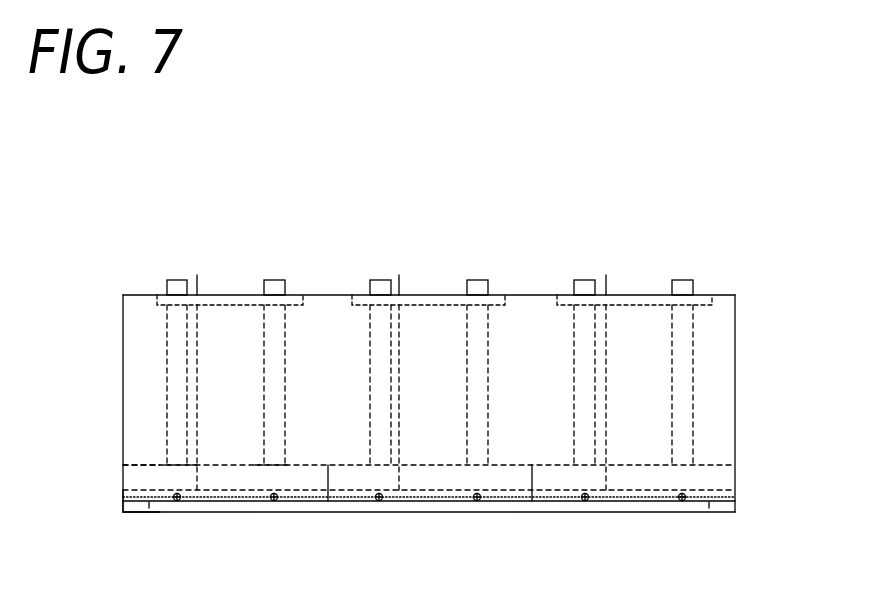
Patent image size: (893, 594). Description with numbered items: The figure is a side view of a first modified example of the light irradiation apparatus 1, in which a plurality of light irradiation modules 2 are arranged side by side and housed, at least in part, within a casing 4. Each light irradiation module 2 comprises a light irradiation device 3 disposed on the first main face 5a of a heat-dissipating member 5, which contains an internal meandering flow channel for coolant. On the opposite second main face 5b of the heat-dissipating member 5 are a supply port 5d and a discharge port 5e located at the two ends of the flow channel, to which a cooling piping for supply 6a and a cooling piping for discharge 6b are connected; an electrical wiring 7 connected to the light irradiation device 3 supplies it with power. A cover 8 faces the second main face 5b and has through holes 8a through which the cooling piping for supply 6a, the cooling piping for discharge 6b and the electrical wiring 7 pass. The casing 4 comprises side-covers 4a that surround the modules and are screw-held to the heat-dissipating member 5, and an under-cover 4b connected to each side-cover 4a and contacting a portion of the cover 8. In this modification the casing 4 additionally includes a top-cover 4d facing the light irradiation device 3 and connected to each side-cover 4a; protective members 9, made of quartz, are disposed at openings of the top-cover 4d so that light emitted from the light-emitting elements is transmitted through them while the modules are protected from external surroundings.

The light irradiation apparatus 1 is at (728, 177).
The light irradiation module 2 is at (379, 319).
The light irradiation device 3 is at (147, 497).
The casing 4 is at (473, 381).
The side-cover 4a is at (735, 344).
The under-cover 4b is at (718, 295).
The top-cover 4d is at (718, 507).
The heat-dissipating member 5 is at (400, 472).
The first main face 5a is at (122, 500).
The second main face 5b is at (140, 465).
The supply port 5d is at (182, 465).
The discharge port 5e is at (273, 465).
The cooling piping for supply 6a is at (167, 292).
The cooling piping for discharge 6b is at (268, 282).
The electrical wiring 7 is at (195, 280).
The cover 8 is at (158, 302).
The through hole 8a is at (163, 293).
The protective member 9 is at (503, 507).